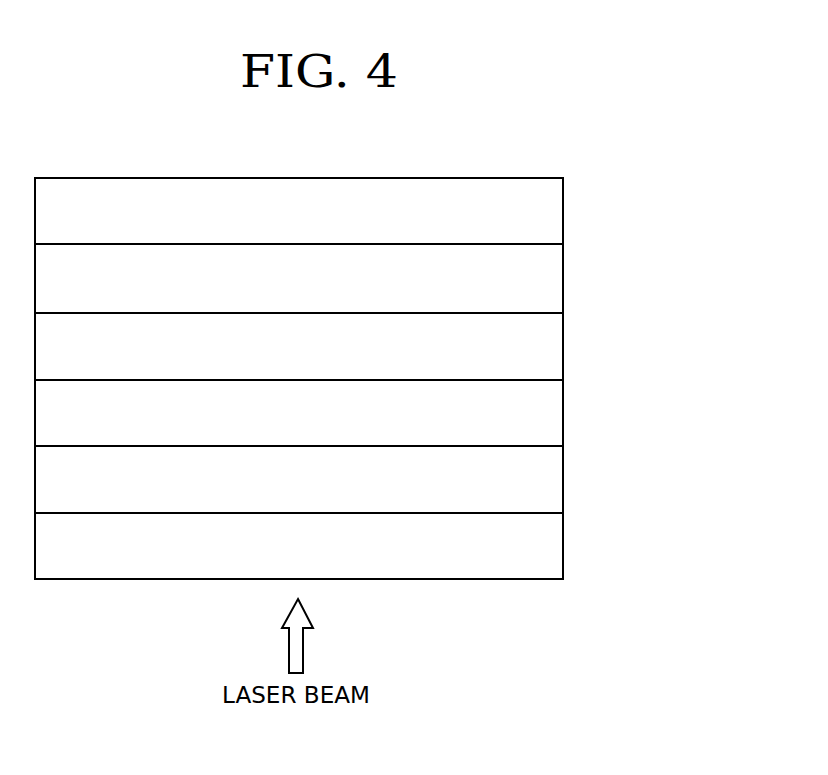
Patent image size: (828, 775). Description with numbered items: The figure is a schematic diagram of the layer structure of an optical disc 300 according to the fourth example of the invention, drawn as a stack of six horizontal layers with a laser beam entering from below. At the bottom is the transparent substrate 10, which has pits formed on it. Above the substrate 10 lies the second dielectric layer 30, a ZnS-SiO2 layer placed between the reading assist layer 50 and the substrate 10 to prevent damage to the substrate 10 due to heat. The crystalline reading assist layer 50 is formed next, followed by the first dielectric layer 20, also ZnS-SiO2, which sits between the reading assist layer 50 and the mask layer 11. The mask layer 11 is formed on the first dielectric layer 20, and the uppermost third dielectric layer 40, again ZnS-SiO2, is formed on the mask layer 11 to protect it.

The optical disc 300 is at (582, 158).
The third dielectric layer 40 is at (563, 210).
The mask layer 11 is at (563, 280).
The first dielectric layer 20 is at (563, 351).
The reading assist layer 50 is at (563, 420).
The second dielectric layer 30 is at (563, 485).
The substrate 10 is at (563, 550).